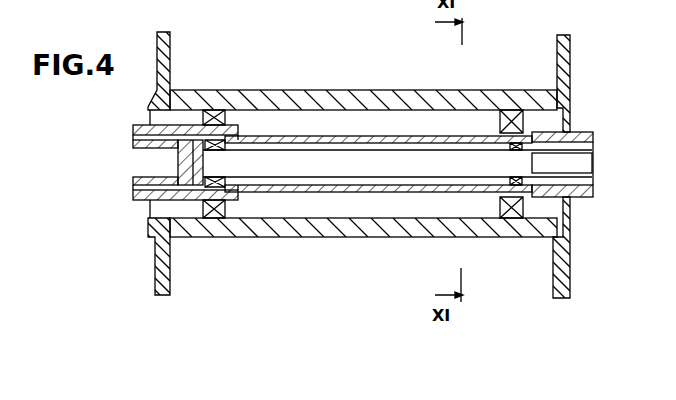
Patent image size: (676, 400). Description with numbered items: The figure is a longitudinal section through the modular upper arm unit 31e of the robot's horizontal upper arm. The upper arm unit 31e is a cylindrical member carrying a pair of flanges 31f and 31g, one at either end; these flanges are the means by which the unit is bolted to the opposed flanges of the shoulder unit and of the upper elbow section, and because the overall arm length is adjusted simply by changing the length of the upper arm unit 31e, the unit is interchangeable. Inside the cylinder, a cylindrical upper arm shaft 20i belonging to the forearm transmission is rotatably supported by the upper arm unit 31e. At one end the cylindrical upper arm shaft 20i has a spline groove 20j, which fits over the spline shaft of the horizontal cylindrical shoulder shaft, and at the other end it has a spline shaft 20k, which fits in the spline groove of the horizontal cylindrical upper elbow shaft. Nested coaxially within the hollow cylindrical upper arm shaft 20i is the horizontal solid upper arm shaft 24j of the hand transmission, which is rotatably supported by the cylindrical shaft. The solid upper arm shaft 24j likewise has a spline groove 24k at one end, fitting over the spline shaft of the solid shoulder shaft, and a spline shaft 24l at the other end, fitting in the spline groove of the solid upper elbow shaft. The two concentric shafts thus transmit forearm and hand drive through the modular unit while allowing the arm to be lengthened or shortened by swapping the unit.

The upper arm unit 31e is at (291, 92).
The flange 31f is at (167, 36).
The flange 31g is at (571, 38).
The spline groove 20j is at (133, 140).
The spline groove 24k is at (133, 167).
The horizontal solid upper arm shaft 24j is at (365, 177).
The cylindrical upper arm shaft 20i is at (263, 197).
The spline shaft 20k is at (590, 134).
The spline shaft 24l is at (580, 164).